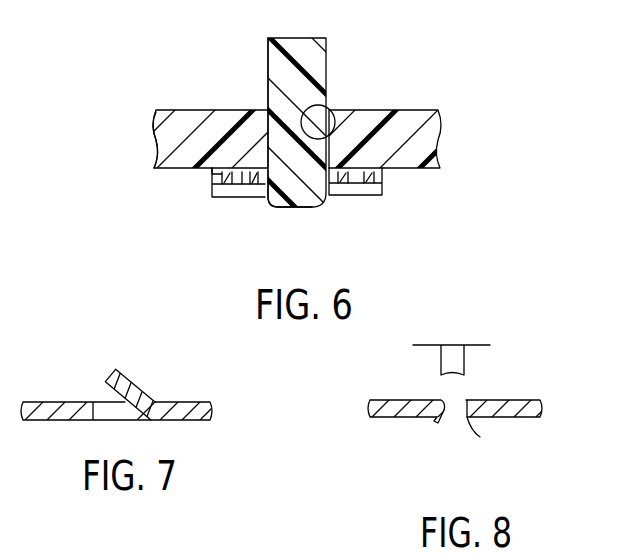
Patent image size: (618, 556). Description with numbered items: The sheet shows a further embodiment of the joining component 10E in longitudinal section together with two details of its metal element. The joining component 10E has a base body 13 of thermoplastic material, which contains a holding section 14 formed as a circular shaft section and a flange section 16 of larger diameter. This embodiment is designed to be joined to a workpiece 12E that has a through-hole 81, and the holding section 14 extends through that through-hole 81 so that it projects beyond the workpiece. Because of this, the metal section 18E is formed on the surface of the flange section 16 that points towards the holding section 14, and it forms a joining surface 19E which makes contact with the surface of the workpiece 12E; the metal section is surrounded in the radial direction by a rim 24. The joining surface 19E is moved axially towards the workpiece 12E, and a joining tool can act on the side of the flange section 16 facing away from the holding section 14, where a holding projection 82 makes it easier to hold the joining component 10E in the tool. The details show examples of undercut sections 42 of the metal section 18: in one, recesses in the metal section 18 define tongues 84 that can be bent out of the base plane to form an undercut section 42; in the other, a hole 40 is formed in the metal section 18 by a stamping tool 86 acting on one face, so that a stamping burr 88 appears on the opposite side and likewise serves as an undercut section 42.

In FIG. 6, the joining component 10E is at (432, 91).
In FIG. 6, the workpiece 12E is at (440, 143).
In FIG. 6, the base body 13 is at (268, 56).
In FIG. 6, the holding section 14 is at (313, 57).
In FIG. 6, the flange section 16 is at (221, 190).
In FIG. 7, the metal section 18 is at (50, 405).
In FIG. 8, the metal section 18 is at (523, 408).
In FIG. 6, the metal section 18E is at (245, 178).
In FIG. 6, the joining surface 19E is at (236, 168).
In FIG. 6, the rim 24 is at (213, 173).
In FIG. 8, the hole 40 is at (455, 420).
In FIG. 7, the undercut section 42 is at (135, 381).
In FIG. 8, the undercut section 42 is at (438, 425).
In FIG. 6, the through-hole 81 is at (331, 102).
In FIG. 6, the holding projection 82 is at (289, 195).
In FIG. 7, the tongue 84 is at (118, 380).
In FIG. 8, the stamping tool 86 is at (459, 364).
In FIG. 8, the stamping burr 88 is at (480, 437).